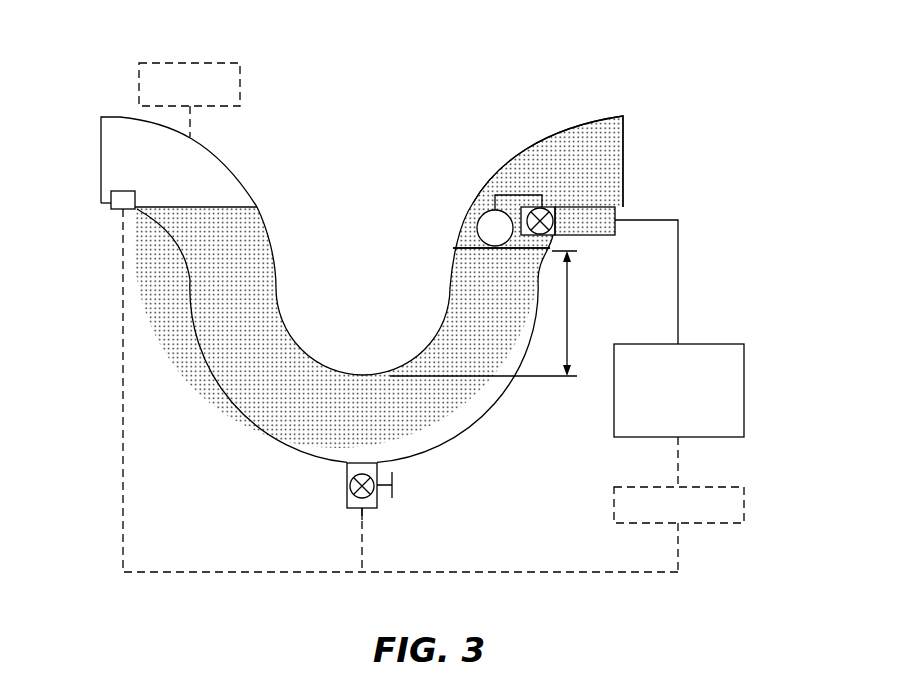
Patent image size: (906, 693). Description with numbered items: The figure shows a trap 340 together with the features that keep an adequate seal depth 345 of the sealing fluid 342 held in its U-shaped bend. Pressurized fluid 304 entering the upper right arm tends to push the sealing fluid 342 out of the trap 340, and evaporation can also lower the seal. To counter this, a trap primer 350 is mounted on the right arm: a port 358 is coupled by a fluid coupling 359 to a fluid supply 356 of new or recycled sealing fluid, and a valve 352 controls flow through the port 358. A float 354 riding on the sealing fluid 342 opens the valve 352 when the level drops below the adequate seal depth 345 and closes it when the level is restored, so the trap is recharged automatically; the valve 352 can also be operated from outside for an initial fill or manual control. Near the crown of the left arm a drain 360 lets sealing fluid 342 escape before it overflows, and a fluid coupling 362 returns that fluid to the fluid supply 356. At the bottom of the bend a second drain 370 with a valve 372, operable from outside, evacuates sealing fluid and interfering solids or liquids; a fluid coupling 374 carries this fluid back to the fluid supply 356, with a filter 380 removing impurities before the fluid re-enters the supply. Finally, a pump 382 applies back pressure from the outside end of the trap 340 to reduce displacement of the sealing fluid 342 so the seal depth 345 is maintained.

The trap 340 is at (306, 50).
The sealing fluid 342 is at (308, 381).
The pressurized fluid 304 is at (548, 156).
The trap primer 350 is at (491, 148).
The valve 352 is at (547, 208).
The float 354 is at (486, 221).
The port 358 is at (556, 208).
The seal depth 345 is at (568, 302).
The fluid coupling 359 is at (678, 282).
The fluid supply 356 is at (744, 395).
The filter 380 is at (744, 510).
The pump 382 is at (139, 92).
The drain 360 is at (113, 210).
The fluid coupling 362 is at (123, 412).
The drain 370 is at (342, 532).
The valve 372 is at (348, 492).
The fluid coupling 374 is at (362, 540).